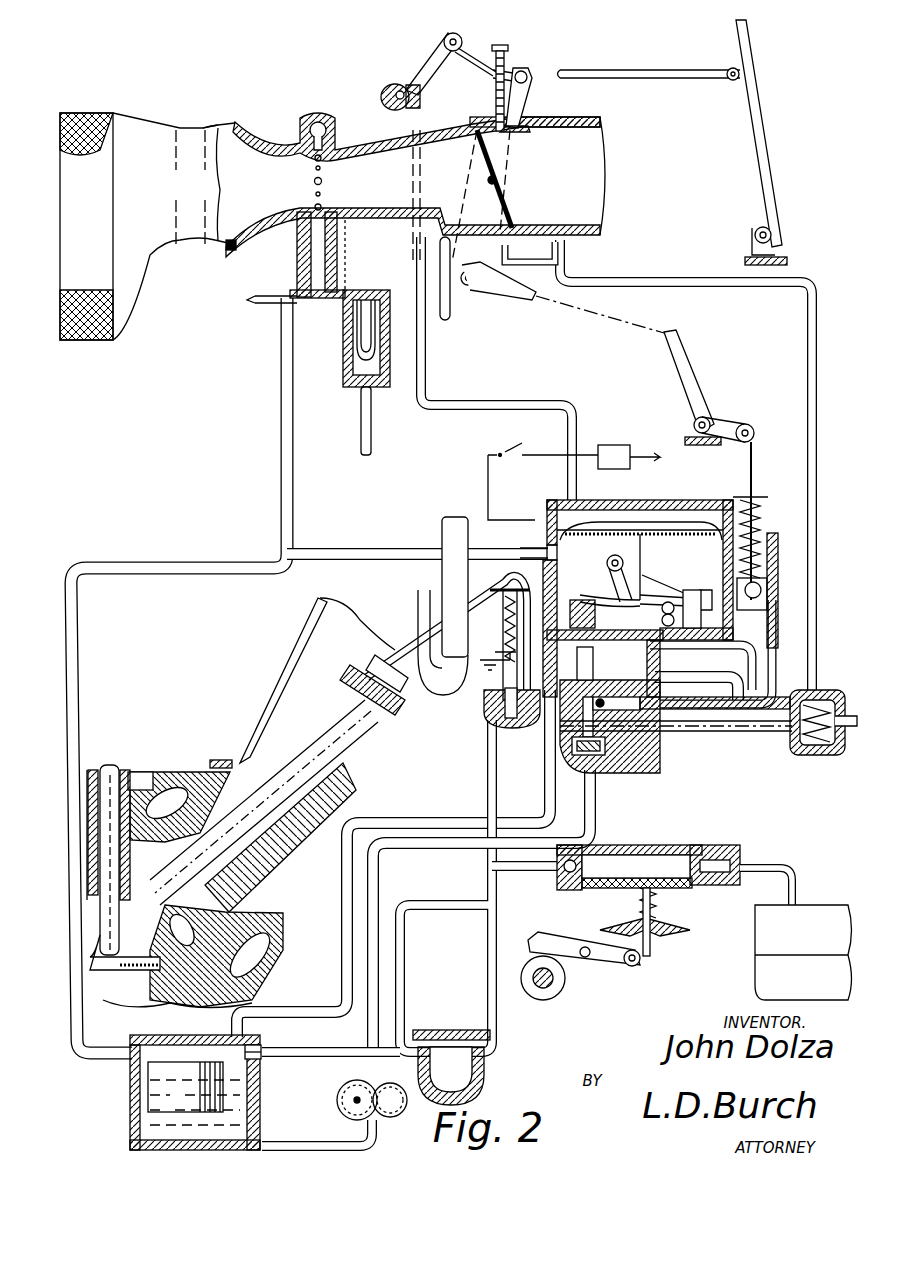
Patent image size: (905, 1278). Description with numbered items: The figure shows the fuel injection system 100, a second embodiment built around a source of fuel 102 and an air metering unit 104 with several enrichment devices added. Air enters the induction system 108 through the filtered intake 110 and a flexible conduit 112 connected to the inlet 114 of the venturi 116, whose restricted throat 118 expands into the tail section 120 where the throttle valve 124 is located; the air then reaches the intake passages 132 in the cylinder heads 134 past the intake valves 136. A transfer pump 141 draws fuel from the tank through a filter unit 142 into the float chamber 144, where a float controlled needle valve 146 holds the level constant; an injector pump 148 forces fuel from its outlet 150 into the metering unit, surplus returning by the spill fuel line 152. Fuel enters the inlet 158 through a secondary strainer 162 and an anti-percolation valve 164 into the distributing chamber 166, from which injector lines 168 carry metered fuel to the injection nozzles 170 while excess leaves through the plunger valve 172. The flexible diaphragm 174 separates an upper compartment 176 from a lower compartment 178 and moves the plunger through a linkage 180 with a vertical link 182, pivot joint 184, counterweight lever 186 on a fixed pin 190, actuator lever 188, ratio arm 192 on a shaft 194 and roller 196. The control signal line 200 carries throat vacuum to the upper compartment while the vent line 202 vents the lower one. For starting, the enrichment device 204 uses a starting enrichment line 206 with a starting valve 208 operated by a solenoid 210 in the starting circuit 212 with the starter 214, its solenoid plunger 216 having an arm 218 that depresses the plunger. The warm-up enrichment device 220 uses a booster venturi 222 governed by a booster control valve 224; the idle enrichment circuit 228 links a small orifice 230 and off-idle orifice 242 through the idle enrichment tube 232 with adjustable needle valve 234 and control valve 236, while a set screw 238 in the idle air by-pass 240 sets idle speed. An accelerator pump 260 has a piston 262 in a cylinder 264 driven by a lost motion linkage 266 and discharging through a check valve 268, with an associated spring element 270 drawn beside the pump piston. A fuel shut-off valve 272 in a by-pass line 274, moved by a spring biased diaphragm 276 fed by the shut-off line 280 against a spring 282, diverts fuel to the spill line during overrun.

The fuel injection system embodiment 100 is at (273, 506).
The source of fuel 102 is at (758, 960).
The air metering unit 104 is at (574, 118).
The induction system 108 is at (208, 128).
The filtered intake 110 is at (108, 118).
The flexible conduit 112 is at (145, 128).
The inlet 114 is at (230, 252).
The venturi 116 is at (284, 127).
The restricted throat 118 is at (328, 150).
The tail section 120 is at (605, 190).
The throttle valve 124 is at (504, 212).
The intake passages 132 is at (224, 760).
The cylinder heads 134 is at (170, 772).
The intake valves 136 is at (110, 765).
The transfer pump 141 is at (642, 865).
The filter unit 142 is at (486, 1085).
The float chamber 144 is at (132, 1089).
The float controlled needle valve 146 is at (262, 1060).
The injector pump 148 is at (340, 1106).
The outlet 150 is at (460, 855).
The spill fuel line 152 is at (545, 770).
The inlet 158 is at (596, 756).
The secondary strainer 162 is at (640, 760).
The anti-percolation valve 164 is at (605, 720).
The distributing chamber 166 is at (578, 655).
The injector lines 168 is at (462, 625).
The injection nozzles 170 is at (366, 695).
The by-pass or plunger valve 172 is at (595, 618).
The flexible diaphragm 174 is at (595, 520).
The upper compartment 176 is at (640, 525).
The lower compartment 178 is at (548, 548).
The linkage 180 is at (678, 585).
The vertical link 182 is at (660, 520).
The pivot joint 184 is at (620, 604).
The counterweight lever 186 is at (706, 590).
The actuator lever 188 is at (661, 616).
The fixed pin 190 is at (693, 610).
The ratio arm 192 is at (643, 555).
The shaft 194 is at (608, 562).
The roller 196 is at (676, 604).
The control signal line 200 is at (418, 244).
The vent line 202 is at (283, 330).
The starting enrichment device 204 is at (494, 687).
The starting enrichment line 206 is at (486, 775).
The starting valve 208 is at (510, 730).
The solenoid 210 is at (491, 653).
The starting circuit 212 is at (541, 454).
The starter 214 is at (616, 448).
The solenoid plunger 216 is at (504, 625).
The arm 218 is at (555, 556).
The warm-up enrichment device 220 is at (289, 283).
The booster venturi 222 is at (325, 240).
The booster control valve 224 is at (328, 305).
The idle enrichment circuit 228 is at (474, 42).
The small orifice 230 is at (520, 132).
The idle enrichment tube 232 is at (490, 75).
The adjustable needle valve 234 is at (510, 52).
The control valve 236 is at (404, 90).
The set screw 238 is at (496, 288).
The idle air by-pass 240 is at (515, 248).
The off-idle orifice 242 is at (430, 130).
The accelerator pump 260 is at (781, 533).
The piston 262 is at (768, 590).
The cylinder 264 is at (774, 648).
The spring biased lost motion linkage 266 is at (738, 425).
The one-way check valve 268 is at (652, 650).
The regulator spring 270 is at (762, 500).
The fuel shut-off valve 272 is at (720, 743).
The by-pass line 274 is at (706, 721).
The spring biased diaphragm 276 is at (800, 740).
The shut-off line 280 is at (808, 320).
The spring 282 is at (818, 756).